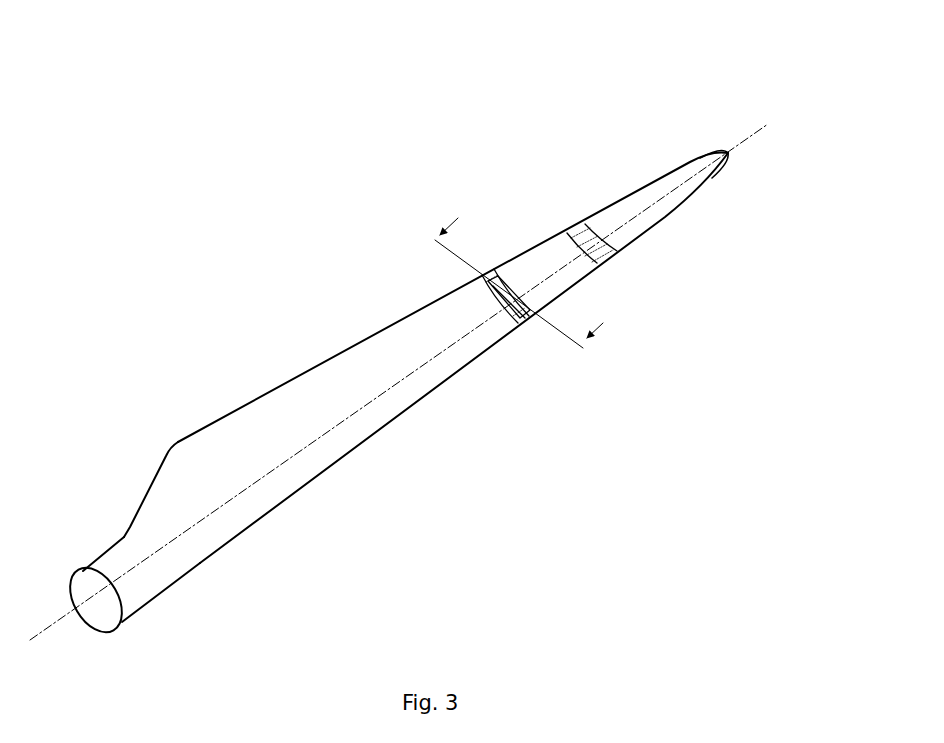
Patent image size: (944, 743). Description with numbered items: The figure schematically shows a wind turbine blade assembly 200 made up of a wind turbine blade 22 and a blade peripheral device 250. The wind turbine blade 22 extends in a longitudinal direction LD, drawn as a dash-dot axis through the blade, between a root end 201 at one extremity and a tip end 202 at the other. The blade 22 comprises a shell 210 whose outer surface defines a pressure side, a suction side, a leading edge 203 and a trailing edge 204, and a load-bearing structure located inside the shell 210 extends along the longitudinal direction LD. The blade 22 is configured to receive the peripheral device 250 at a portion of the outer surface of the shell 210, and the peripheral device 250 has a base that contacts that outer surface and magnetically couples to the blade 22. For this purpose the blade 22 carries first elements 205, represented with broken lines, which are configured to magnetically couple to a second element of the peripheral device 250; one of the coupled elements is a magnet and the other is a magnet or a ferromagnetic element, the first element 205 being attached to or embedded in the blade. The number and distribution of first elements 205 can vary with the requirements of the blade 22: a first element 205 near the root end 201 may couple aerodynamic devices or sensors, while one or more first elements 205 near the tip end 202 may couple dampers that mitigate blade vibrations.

The wind turbine blade 22 is at (190, 415).
The wind turbine blade assembly 200 is at (361, 201).
The root end 201 is at (125, 603).
The tip end 202 is at (728, 160).
The leading edge 203 is at (472, 365).
The trailing edge 204 is at (332, 357).
The first element 205 is at (483, 273).
The shell 210 is at (285, 413).
The peripheral device 250 is at (515, 320).
The longitudinal direction LD is at (762, 128).